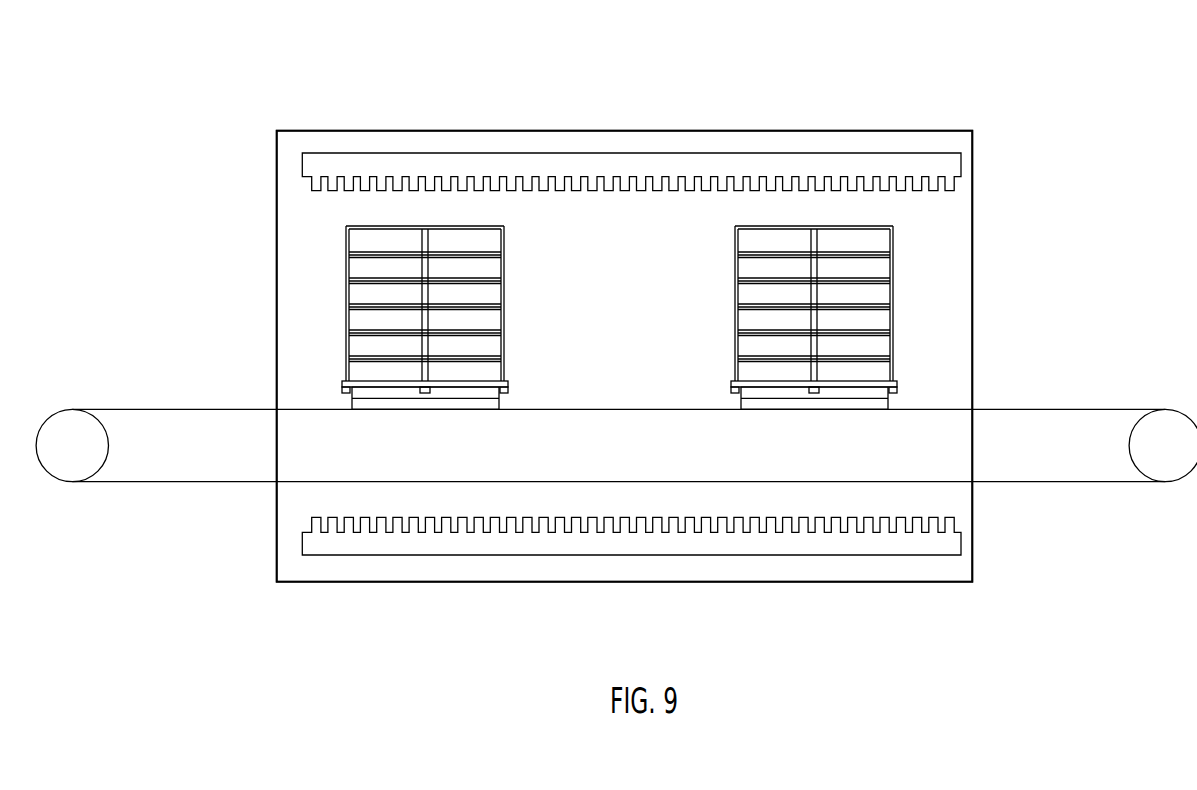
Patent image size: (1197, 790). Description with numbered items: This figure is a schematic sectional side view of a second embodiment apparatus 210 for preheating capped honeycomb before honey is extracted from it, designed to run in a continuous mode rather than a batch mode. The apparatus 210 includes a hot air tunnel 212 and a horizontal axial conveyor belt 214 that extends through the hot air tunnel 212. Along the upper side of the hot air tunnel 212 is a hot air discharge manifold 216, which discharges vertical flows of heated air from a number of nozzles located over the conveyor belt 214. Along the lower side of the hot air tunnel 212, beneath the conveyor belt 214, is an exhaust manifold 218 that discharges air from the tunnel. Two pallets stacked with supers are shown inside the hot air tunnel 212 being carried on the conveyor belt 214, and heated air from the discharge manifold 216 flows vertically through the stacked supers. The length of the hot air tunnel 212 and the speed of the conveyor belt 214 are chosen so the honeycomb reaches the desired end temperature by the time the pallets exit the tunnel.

The second embodiment apparatus 210 is at (1014, 94).
The hot air tunnel 212 is at (372, 130).
The horizontal axial conveyor belt 214 is at (196, 409).
The hot air discharge manifold 216 is at (713, 152).
The exhaust manifold 218 is at (775, 556).